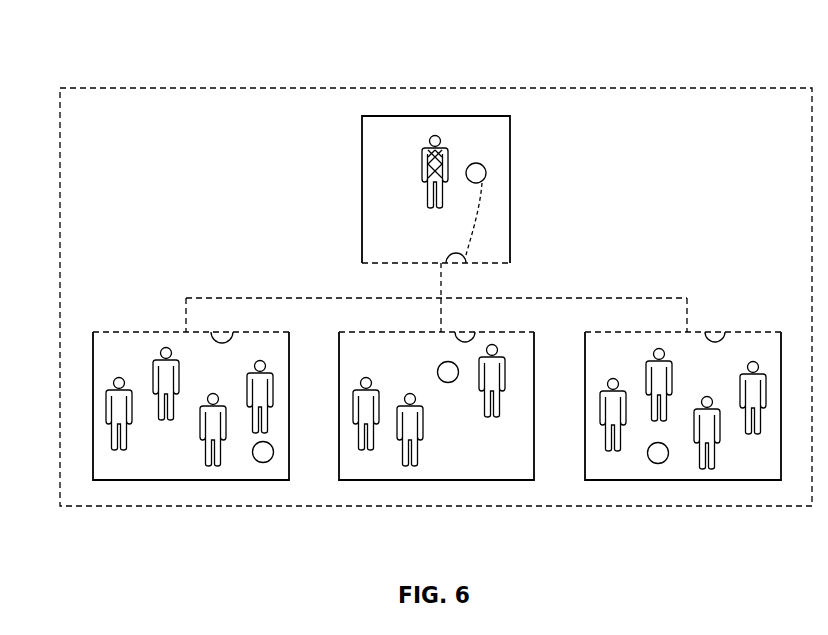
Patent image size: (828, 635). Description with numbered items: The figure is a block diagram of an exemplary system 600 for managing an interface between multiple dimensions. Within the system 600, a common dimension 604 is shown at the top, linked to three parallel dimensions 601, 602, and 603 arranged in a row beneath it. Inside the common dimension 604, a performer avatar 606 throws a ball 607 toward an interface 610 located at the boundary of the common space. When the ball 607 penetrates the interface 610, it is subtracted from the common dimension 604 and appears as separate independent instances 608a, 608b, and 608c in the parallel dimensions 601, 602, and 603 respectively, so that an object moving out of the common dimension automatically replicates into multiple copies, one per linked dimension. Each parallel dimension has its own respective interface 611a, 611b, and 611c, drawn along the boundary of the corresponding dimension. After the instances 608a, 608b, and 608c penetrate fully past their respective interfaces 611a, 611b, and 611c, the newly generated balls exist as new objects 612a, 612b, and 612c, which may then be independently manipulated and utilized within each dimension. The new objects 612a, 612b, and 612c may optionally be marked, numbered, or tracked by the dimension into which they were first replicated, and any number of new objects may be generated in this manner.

The system 600 is at (113, 62).
The parallel dimension 601 is at (194, 481).
The parallel dimension 602 is at (433, 481).
The parallel dimension 603 is at (688, 481).
The common dimension 604 is at (510, 158).
The performer avatar 606 is at (422, 167).
The ball 607 is at (486, 173).
The independent instance 608a is at (226, 342).
The independent instance 608b is at (455, 339).
The independent instance 608c is at (727, 337).
The interface 610 is at (425, 263).
The interface 611a is at (170, 331).
The interface 611b is at (415, 331).
The interface 611c is at (663, 331).
The new object 612a is at (264, 463).
The new object 612b is at (450, 383).
The new object 612c is at (659, 464).